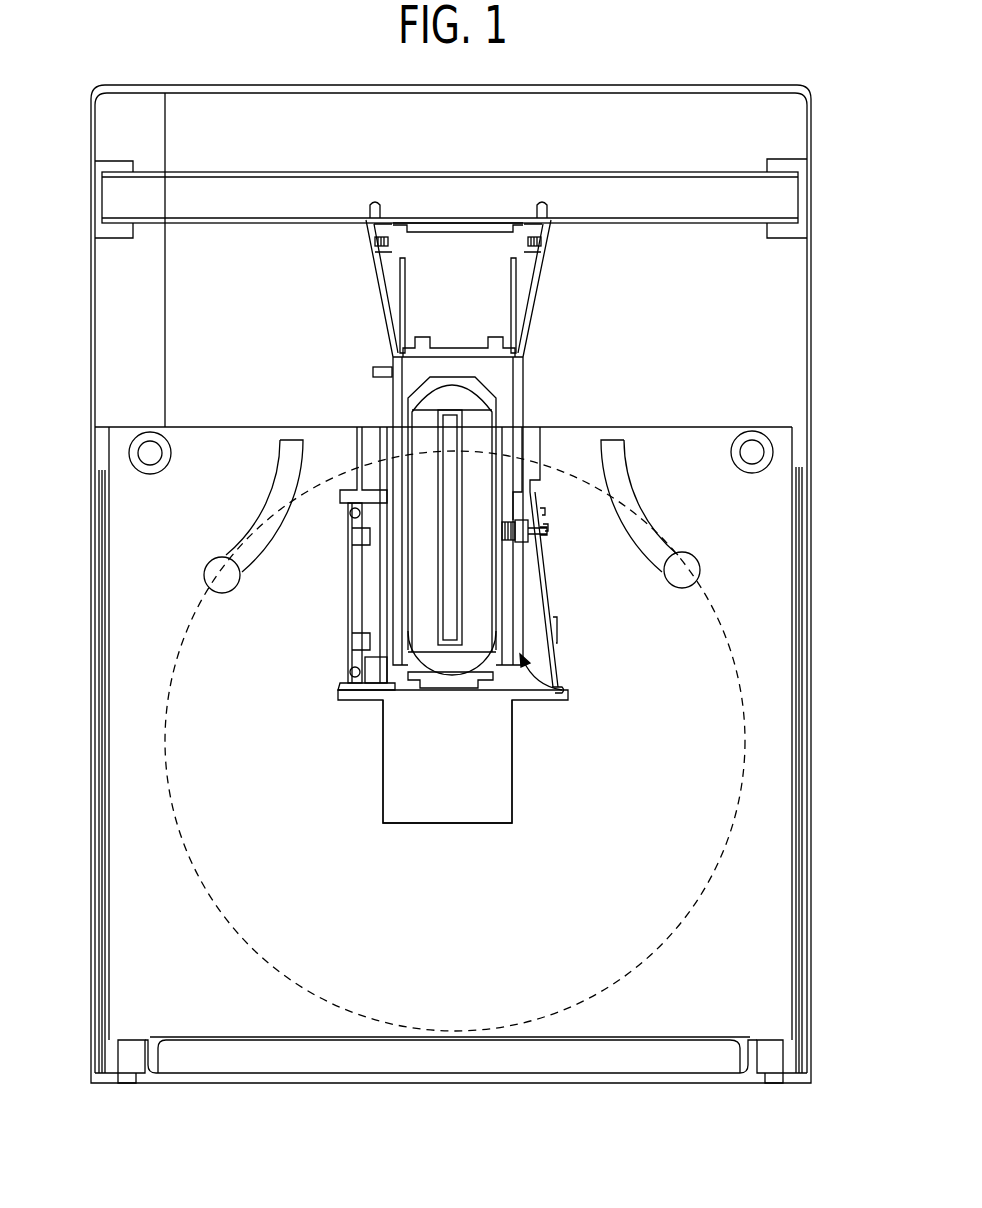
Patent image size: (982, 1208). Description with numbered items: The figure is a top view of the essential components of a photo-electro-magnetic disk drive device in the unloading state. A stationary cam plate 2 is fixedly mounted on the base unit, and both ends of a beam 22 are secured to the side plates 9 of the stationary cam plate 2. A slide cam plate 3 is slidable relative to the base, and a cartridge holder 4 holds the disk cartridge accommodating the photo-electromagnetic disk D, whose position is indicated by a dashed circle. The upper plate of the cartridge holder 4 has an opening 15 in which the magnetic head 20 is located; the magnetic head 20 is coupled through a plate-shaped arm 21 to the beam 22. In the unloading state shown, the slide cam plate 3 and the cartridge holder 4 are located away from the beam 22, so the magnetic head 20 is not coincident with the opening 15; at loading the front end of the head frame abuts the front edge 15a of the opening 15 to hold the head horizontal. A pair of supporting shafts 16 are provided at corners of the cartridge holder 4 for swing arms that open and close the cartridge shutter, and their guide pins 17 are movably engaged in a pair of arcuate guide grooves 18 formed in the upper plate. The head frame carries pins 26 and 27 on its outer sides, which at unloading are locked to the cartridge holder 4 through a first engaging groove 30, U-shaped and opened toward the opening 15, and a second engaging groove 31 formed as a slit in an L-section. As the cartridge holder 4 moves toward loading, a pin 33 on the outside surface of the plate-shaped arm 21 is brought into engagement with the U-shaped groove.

The stationary cam plate 2 is at (782, 360).
The slide cam plate 3 is at (812, 706).
The cartridge holder 4 is at (770, 792).
The side plates 9 is at (812, 323).
The opening 15 is at (456, 767).
The front edge of the opening 15a is at (418, 845).
The supporting shafts 16 is at (152, 454).
The guide pins 17 is at (220, 583).
The arcuate guide grooves 18 is at (262, 512).
The magnetic head 20 is at (562, 690).
The plate-shaped arm 21 is at (420, 305).
The beam 22 is at (615, 195).
The pin 26 is at (387, 545).
The pin 27 is at (547, 552).
The first engaging groove 30 is at (370, 620).
The second engaging groove 31 is at (557, 620).
The pin 33 is at (382, 363).
The photo-electromagnetic disk D is at (673, 927).